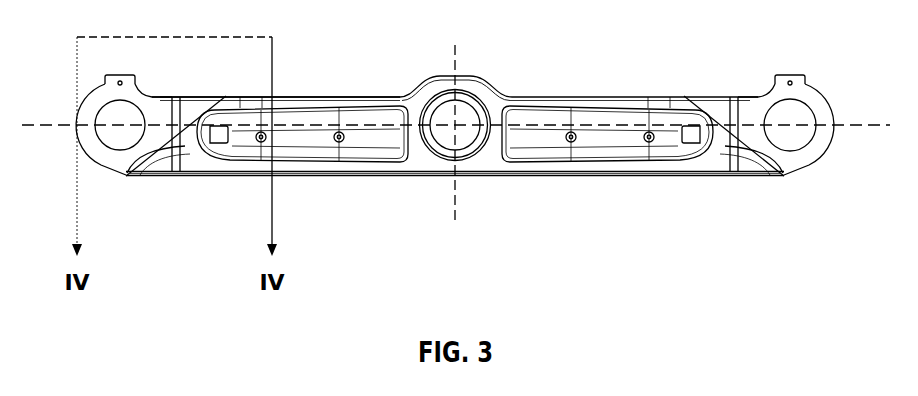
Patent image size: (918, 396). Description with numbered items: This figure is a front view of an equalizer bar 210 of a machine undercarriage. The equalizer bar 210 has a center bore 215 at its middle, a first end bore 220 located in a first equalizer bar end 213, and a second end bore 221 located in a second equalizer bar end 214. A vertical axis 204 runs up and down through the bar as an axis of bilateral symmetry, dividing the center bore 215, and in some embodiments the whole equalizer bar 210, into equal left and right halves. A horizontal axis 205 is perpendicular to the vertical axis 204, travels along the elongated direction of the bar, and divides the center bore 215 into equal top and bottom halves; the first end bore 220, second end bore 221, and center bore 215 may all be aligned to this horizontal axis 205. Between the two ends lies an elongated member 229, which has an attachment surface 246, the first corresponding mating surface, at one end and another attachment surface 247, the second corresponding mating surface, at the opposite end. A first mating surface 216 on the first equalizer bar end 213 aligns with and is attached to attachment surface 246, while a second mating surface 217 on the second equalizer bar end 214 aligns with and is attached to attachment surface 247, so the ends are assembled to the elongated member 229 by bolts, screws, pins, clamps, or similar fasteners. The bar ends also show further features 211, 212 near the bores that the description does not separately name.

The equalizer bar 210 is at (599, 44).
The first mounting tab 211 is at (97, 86).
The second mounting tab 212 is at (812, 84).
The first equalizer bar end 213 is at (90, 109).
The second equalizer bar end 214 is at (831, 117).
The center bore 215 is at (466, 153).
The first mating surface 216 is at (126, 170).
The second mating surface 217 is at (783, 170).
The first end bore 220 is at (112, 147).
The second end bore 221 is at (808, 144).
The elongated member 229 is at (296, 97).
The vertical axis 204 is at (457, 63).
The horizontal axis 205 is at (442, 121).
The attachment surface 246 is at (158, 164).
The attachment surface 247 is at (755, 168).